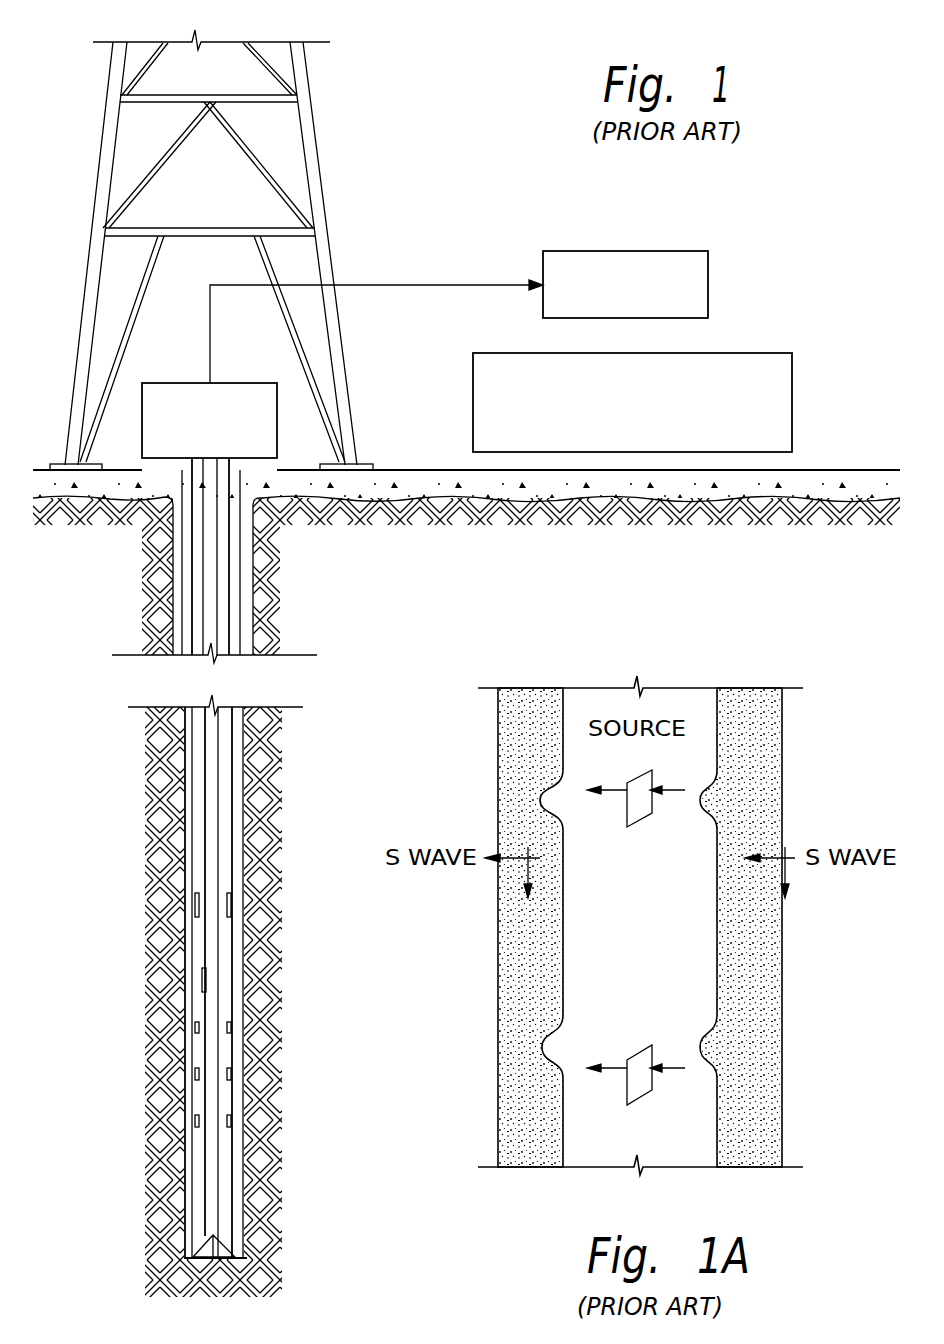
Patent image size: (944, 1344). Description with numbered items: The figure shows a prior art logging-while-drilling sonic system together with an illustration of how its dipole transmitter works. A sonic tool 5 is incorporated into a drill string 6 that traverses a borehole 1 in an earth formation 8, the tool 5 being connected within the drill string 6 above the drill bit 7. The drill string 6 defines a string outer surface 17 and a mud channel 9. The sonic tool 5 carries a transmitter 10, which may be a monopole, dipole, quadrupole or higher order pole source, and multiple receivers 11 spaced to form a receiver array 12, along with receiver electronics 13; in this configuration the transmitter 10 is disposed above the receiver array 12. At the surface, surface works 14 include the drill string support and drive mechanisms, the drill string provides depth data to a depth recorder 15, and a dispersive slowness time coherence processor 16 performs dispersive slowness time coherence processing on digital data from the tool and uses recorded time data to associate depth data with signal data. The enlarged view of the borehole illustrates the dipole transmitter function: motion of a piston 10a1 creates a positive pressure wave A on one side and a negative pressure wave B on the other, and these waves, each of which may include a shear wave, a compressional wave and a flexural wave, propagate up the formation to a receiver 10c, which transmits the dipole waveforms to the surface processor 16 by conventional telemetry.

In FIG. 1, the borehole 1 is at (240, 561).
In FIG. 1, the sonic tool 5 is at (186, 986).
In FIG. 1, the drill string 6 is at (229, 602).
In FIG. 1, the drill bit 7 is at (222, 1248).
In FIG. 1, the earth formation 8 is at (250, 748).
In FIG. 1, the mud channel 9 is at (215, 806).
In FIG. 1, the transmitter 10 is at (198, 893).
In FIG. 1, the receivers 11 is at (230, 1027).
In FIG. 1, the receiver array 12 is at (210, 1069).
In FIG. 1, the receiver electronics 13 is at (207, 978).
In FIG. 1, the surface works 14 is at (178, 383).
In FIG. 1, the depth recorder 15 is at (709, 271).
In FIG. 1, the dispersive slowness time coherence processor 16 is at (793, 380).
In FIG. 1, the string outer surface 17 is at (198, 752).
In FIG. 1A, the receiver 10c is at (639, 815).
In FIG. 1A, the piston 10a1 is at (639, 1090).
In FIG. 1A, the positive pressure wave A is at (542, 1048).
In FIG. 1A, the negative pressure wave B is at (703, 1040).